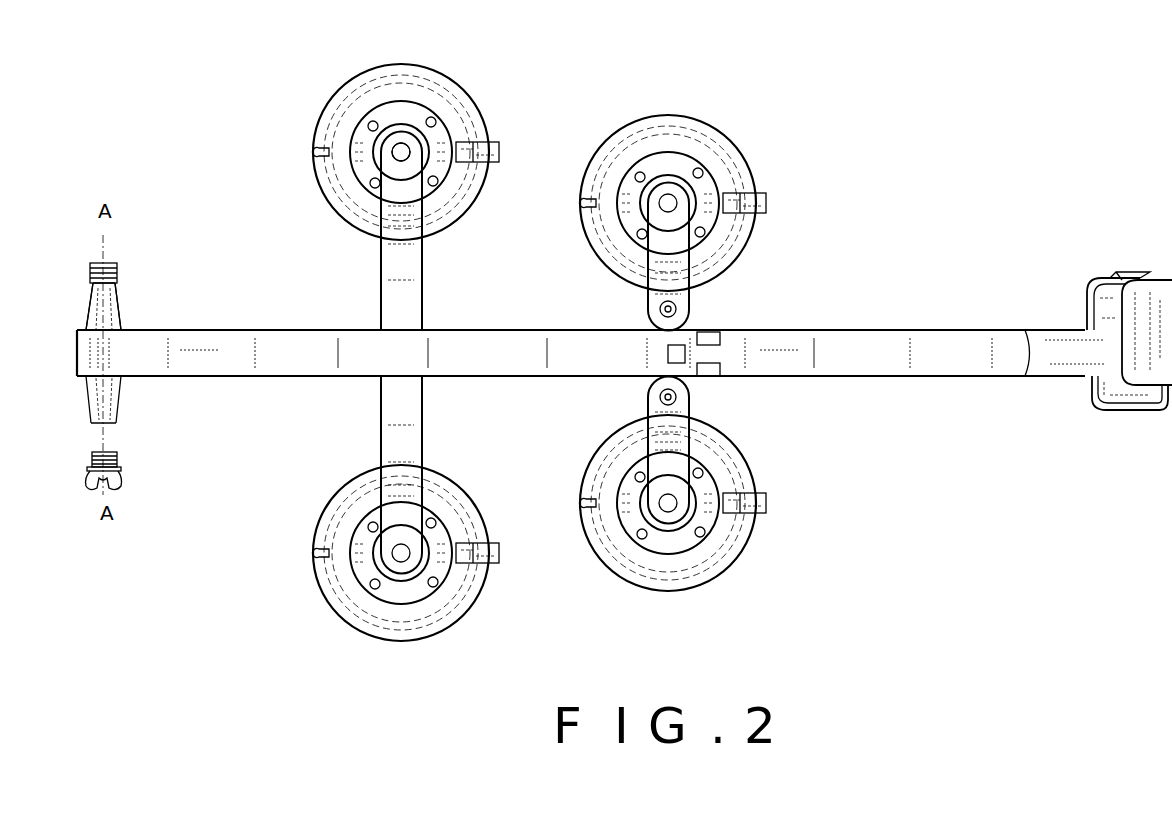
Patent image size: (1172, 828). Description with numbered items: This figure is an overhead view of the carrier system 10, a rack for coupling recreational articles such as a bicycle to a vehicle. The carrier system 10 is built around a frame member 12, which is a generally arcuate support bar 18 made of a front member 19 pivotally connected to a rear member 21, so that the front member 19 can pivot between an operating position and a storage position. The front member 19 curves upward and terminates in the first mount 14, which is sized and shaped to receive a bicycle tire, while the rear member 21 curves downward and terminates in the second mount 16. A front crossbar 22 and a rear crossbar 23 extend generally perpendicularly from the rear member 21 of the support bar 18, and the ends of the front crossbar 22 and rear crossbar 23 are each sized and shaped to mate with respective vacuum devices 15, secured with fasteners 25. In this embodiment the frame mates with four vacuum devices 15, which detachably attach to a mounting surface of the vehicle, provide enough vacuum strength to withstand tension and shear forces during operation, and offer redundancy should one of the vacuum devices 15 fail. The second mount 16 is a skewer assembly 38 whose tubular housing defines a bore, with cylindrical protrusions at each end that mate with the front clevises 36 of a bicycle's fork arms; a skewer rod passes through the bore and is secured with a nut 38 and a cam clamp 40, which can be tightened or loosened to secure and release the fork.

The carrier system 10 is at (888, 200).
The frame member 12 is at (574, 327).
The first mount 14 is at (1066, 318).
The vacuum devices 15 is at (465, 90).
The second mount 16 is at (130, 314).
The support bar 18 is at (556, 380).
The front member 19 is at (861, 378).
The rear member 21 is at (330, 378).
The front crossbar 22 is at (690, 310).
The rear crossbar 23 is at (381, 306).
The fasteners 25 is at (399, 146).
The front clevises 36 is at (112, 263).
The skewer assembly 38 is at (120, 295).
The cam clamp 40 is at (121, 468).